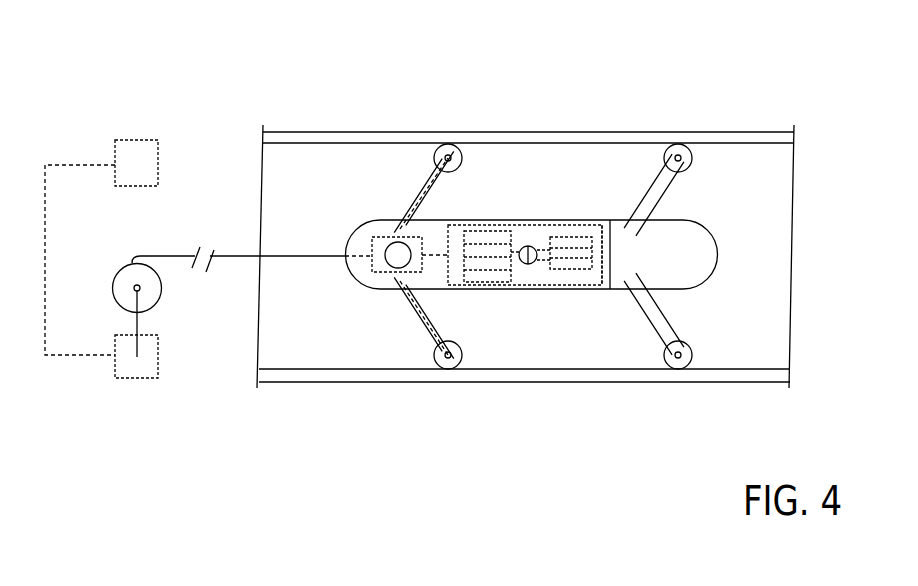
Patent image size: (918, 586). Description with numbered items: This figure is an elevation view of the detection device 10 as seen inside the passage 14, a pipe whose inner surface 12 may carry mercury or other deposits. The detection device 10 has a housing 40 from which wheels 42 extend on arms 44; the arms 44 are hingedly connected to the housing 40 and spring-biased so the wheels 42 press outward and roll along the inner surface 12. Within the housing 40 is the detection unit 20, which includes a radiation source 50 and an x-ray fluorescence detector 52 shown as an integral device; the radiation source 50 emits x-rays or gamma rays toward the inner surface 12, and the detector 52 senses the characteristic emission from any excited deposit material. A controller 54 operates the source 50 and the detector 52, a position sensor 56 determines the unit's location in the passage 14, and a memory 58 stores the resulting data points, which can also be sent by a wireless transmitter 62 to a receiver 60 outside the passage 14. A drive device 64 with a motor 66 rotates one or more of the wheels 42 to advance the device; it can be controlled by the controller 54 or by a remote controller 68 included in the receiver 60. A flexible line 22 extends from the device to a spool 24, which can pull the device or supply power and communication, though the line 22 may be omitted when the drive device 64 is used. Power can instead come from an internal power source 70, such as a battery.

The detection device 10 is at (767, 222).
The inner surface 12 is at (753, 347).
The passage 14 is at (752, 131).
The detection unit 20 is at (472, 248).
The flexible line 22 is at (290, 255).
The spool 24 is at (116, 275).
The housing 40 is at (353, 280).
The wheels 42 is at (467, 160).
The arms 44 is at (441, 129).
The radiation source 50 is at (533, 264).
The x-ray fluorescence detector 52 is at (547, 270).
The controller 54 is at (428, 288).
The position sensor 56 is at (550, 237).
The memory 58 is at (510, 237).
The receiver 60 is at (137, 378).
The wireless transmitter 62 is at (539, 249).
The drive device 64 is at (392, 272).
The motor 66 is at (337, 353).
The remote controller 68 is at (137, 140).
The internal power source 70 is at (597, 297).